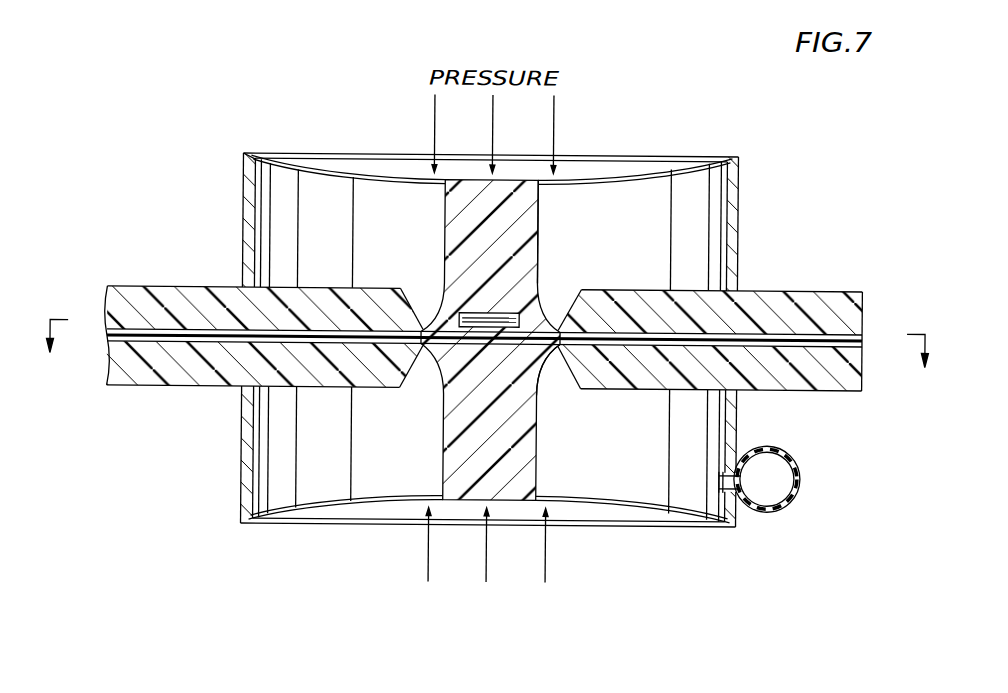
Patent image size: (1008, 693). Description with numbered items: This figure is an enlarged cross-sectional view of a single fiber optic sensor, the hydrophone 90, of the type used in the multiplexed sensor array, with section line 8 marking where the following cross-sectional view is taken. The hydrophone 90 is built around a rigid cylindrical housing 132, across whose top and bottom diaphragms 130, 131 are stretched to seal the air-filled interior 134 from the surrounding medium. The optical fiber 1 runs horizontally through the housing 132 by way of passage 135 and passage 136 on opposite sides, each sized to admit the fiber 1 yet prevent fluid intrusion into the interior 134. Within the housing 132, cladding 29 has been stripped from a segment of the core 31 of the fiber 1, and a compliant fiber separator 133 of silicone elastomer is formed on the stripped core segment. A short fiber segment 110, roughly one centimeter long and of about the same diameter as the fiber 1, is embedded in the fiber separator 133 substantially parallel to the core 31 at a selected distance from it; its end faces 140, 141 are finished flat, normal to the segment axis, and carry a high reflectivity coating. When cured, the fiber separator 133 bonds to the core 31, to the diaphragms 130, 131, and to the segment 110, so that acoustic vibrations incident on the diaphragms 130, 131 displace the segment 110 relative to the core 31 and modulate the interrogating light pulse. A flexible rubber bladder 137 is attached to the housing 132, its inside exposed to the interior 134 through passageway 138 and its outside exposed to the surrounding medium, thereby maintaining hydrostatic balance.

The fiber 1 is at (157, 389).
The line 8— 8 is at (485, 359).
The cladding 29 is at (636, 291).
The core 31 is at (655, 386).
The hydrophone 90 is at (282, 150).
The fiber segment 110 is at (538, 268).
The diaphragm 130 is at (370, 173).
The diaphragm 131 is at (333, 512).
The housing 132 is at (737, 243).
The fiber separator 133 is at (522, 198).
The interior 134 is at (322, 188).
The passage 135 is at (738, 398).
The passage 136 is at (244, 280).
The rubber bladder 137 is at (801, 479).
The passageway 138 is at (737, 503).
The end face 140 is at (552, 375).
The end face 141 is at (453, 311).